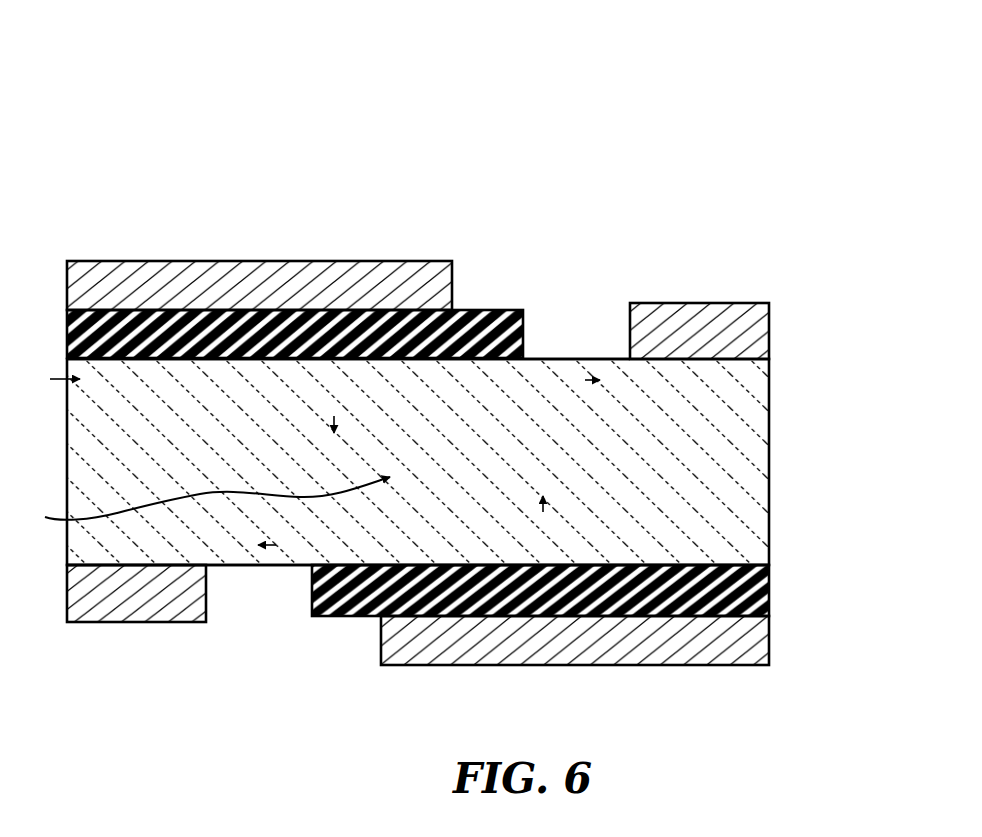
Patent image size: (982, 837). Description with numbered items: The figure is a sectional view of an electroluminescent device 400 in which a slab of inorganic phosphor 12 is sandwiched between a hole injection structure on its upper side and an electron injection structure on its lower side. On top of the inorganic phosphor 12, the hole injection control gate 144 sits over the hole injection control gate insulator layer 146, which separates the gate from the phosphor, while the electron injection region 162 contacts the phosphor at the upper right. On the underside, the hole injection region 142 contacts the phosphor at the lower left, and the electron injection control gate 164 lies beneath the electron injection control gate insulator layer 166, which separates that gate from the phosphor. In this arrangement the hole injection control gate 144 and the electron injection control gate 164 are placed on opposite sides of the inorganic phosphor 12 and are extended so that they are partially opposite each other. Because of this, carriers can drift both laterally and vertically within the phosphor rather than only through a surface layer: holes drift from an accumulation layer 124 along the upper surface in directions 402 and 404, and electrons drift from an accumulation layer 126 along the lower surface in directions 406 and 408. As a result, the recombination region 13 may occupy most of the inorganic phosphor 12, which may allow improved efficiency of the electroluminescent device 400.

The electroluminescent device 400 is at (146, 99).
The inorganic phosphor 12 is at (769, 395).
The recombination region 13 is at (196, 504).
The accumulation layer 124 is at (50, 379).
The accumulation layer 126 is at (755, 538).
The hole injection region 142 is at (190, 622).
The hole injection control gate 144 is at (143, 260).
The hole injection control gate insulator layer 146 is at (465, 310).
The electron injection region 162 is at (745, 303).
The electron injection control gate 164 is at (521, 665).
The electron injection control gate insulator layer 166 is at (352, 616).
The direction 402 is at (573, 380).
The direction 404 is at (335, 413).
The direction 406 is at (285, 545).
The direction 408 is at (544, 516).